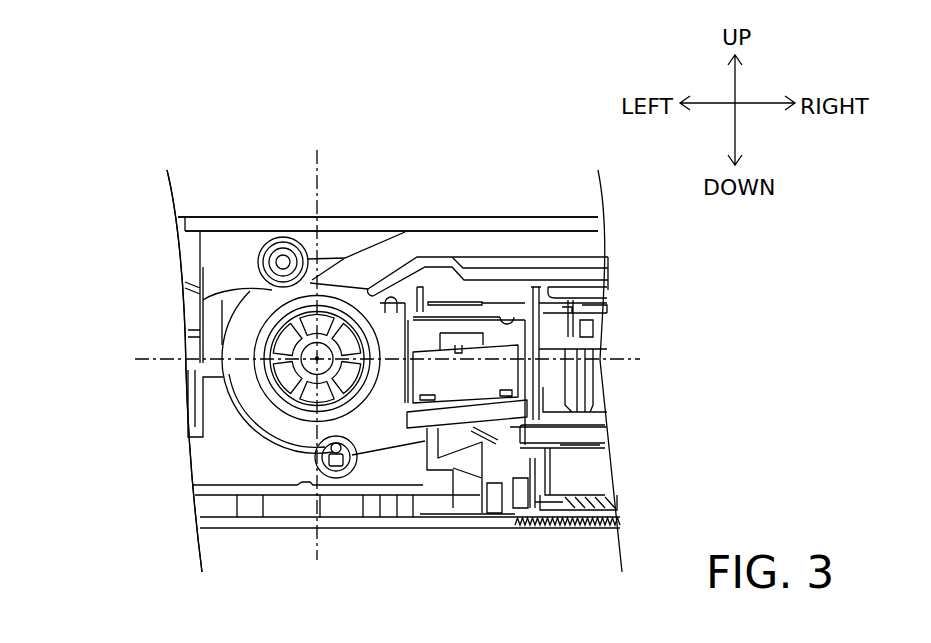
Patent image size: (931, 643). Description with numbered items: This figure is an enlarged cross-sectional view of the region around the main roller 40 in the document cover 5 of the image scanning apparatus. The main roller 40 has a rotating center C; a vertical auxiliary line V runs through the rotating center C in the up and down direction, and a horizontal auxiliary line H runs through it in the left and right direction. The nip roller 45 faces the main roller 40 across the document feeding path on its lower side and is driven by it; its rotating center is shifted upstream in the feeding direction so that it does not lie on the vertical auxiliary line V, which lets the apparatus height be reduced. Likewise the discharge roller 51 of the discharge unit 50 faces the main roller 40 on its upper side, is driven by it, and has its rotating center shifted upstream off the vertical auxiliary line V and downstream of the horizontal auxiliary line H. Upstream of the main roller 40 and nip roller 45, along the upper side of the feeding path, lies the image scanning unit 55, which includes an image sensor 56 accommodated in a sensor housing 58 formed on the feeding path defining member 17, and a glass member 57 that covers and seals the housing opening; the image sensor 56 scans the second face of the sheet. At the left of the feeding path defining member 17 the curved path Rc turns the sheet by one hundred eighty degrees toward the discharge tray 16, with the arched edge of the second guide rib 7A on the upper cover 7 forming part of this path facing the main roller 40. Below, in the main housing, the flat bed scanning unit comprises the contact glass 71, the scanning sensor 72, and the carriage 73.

The document cover 5 is at (177, 221).
The upper cover 7 is at (233, 225).
The second guide rib 7A is at (203, 282).
The curved path Rc is at (232, 309).
The horizontal auxiliary line H is at (158, 359).
The vertical auxiliary line V is at (318, 206).
The main roller 40 is at (240, 380).
The rotating center C is at (317, 358).
The discharge roller 51 is at (275, 250).
The discharge unit 50 is at (289, 216).
The discharge tray 16 is at (580, 277).
The image scanning unit 55 is at (471, 328).
The sensor housing 58 is at (510, 322).
The image sensor 56 is at (486, 393).
The feeding path defining member 17 is at (607, 332).
The contact glass 71 is at (585, 432).
The scanning sensor 72 is at (598, 481).
The nip roller 45 is at (357, 470).
The glass member 57 is at (443, 418).
The carriage 73 is at (507, 500).